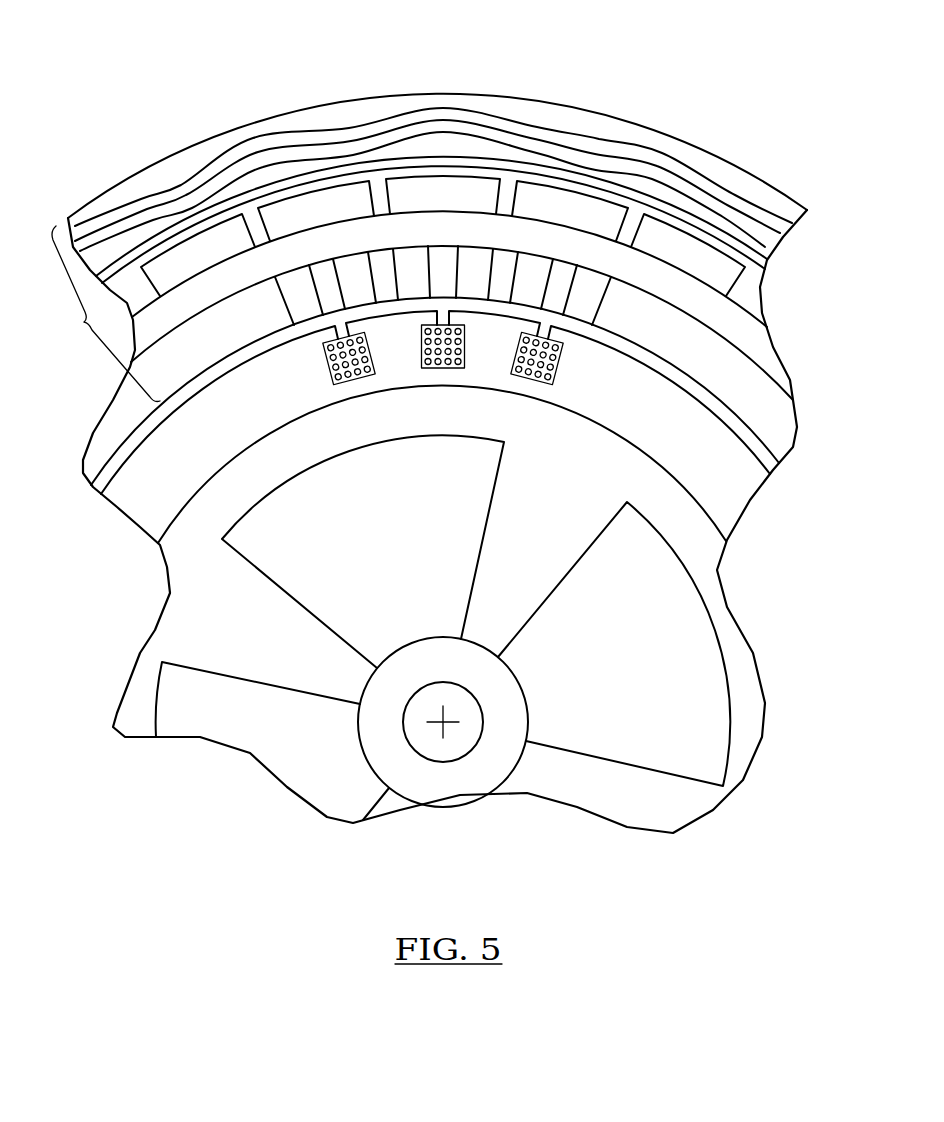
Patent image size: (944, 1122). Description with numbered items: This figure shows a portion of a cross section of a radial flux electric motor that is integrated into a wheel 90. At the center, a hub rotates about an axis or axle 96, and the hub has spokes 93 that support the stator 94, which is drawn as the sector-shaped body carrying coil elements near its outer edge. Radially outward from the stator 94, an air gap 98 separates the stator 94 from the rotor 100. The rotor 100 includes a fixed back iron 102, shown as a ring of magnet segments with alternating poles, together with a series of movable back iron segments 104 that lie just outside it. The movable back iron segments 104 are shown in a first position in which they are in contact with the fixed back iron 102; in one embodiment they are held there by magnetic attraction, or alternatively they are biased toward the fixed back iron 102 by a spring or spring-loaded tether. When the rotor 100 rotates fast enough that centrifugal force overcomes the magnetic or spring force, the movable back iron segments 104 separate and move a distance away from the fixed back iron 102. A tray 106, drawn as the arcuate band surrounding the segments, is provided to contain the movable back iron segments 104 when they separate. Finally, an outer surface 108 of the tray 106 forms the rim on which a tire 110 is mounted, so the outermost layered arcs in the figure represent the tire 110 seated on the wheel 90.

The wheel 90 is at (748, 80).
The spokes 93 is at (486, 523).
The stator 94 is at (253, 403).
The axle 96 is at (452, 731).
The air gap 98 is at (100, 494).
The rotor 100 is at (102, 314).
The fixed back iron 102 is at (367, 248).
The movable back iron segments 104 is at (182, 262).
The tray 106 is at (260, 195).
The outer surface 108 is at (120, 257).
The tire 110 is at (177, 153).